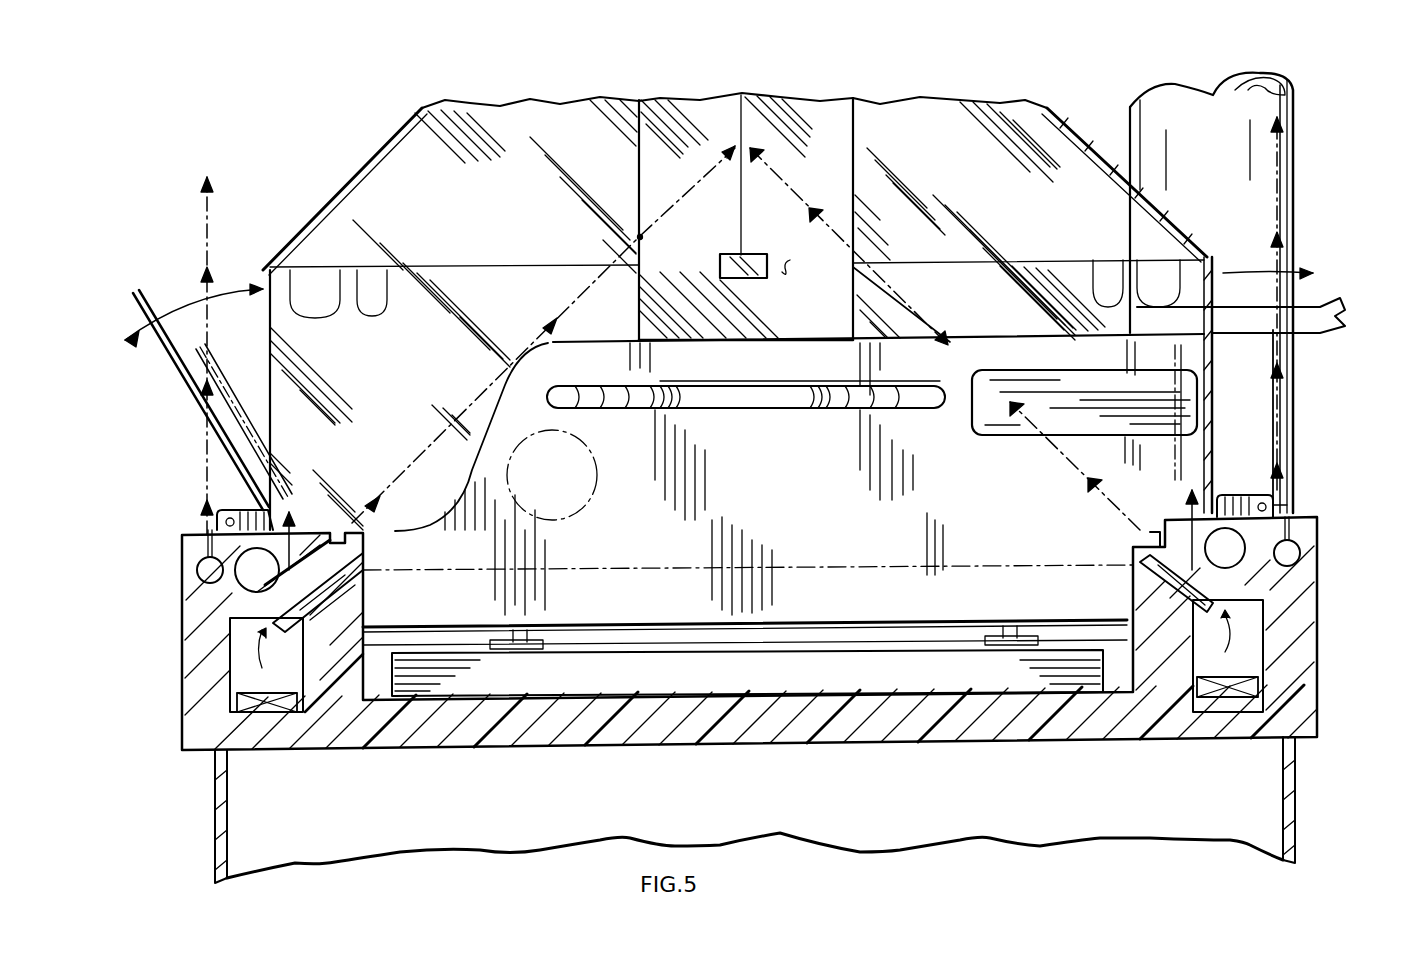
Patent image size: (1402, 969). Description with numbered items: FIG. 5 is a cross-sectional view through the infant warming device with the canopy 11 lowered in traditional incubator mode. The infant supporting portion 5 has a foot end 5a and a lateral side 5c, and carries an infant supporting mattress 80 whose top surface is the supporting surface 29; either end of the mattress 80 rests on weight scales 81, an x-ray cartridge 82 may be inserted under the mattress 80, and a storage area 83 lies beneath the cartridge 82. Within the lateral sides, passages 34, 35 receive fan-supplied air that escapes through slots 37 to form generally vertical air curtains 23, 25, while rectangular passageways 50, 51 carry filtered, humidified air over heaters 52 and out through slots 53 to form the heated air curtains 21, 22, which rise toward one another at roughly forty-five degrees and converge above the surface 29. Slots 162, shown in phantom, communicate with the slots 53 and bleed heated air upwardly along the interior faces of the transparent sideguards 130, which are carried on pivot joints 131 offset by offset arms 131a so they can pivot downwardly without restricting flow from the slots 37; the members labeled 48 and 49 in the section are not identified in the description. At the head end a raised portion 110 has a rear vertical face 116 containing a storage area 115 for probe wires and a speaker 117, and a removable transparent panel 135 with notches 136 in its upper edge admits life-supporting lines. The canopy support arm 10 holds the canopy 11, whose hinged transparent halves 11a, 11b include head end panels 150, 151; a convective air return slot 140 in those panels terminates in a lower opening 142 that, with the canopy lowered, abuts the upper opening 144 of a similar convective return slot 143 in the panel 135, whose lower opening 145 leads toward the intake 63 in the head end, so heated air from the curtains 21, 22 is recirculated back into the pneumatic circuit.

The infant supporting portion 5 is at (1330, 720).
The foot end 5a is at (1320, 595).
The lateral side 5c is at (175, 648).
The canopy support arm 10 is at (1303, 134).
The canopy 11 is at (405, 128).
The canopy half 11a is at (605, 142).
The canopy half 11b is at (923, 136).
The heated air curtain 21 is at (585, 305).
The heated air curtain 22 is at (895, 300).
The air curtain 23 is at (1280, 178).
The air curtain 25 is at (205, 228).
The supporting surface 29 is at (622, 568).
The passage 34 is at (1302, 556).
The passage 35 is at (197, 572).
The slots 37 is at (212, 522).
The support member 48 is at (1280, 585).
The support member 49 is at (235, 618).
The rectangular passageway 50 is at (1260, 636).
The rectangular passageway 51 is at (240, 672).
The heaters 52 is at (240, 700).
The slots 53 is at (348, 543).
The intake 63 is at (790, 406).
The infant supporting mattress 80 is at (778, 575).
The weight scales 81 is at (548, 630).
The x-ray cartridge 82 is at (758, 668).
The storage area 83 is at (790, 814).
The raised portion 110 is at (785, 341).
The storage area 115 is at (1005, 432).
The rear vertically oriented face 116 is at (983, 513).
The speaker 117 is at (597, 500).
The transparent sideguards 130 is at (178, 368).
The pivot joints 131 is at (215, 500).
The offset arms 131a is at (230, 476).
The transparent panel 135 is at (612, 250).
The notches 136 is at (355, 318).
The convective air return slot 140 is at (765, 100).
The lower opening 142 is at (790, 268).
The convective return slot 143 is at (788, 306).
The upper opening 144 is at (708, 262).
The lower opening 145 is at (730, 348).
The head end panel 150 is at (968, 110).
The head end panel 151 is at (540, 82).
The slots 162 is at (318, 510).